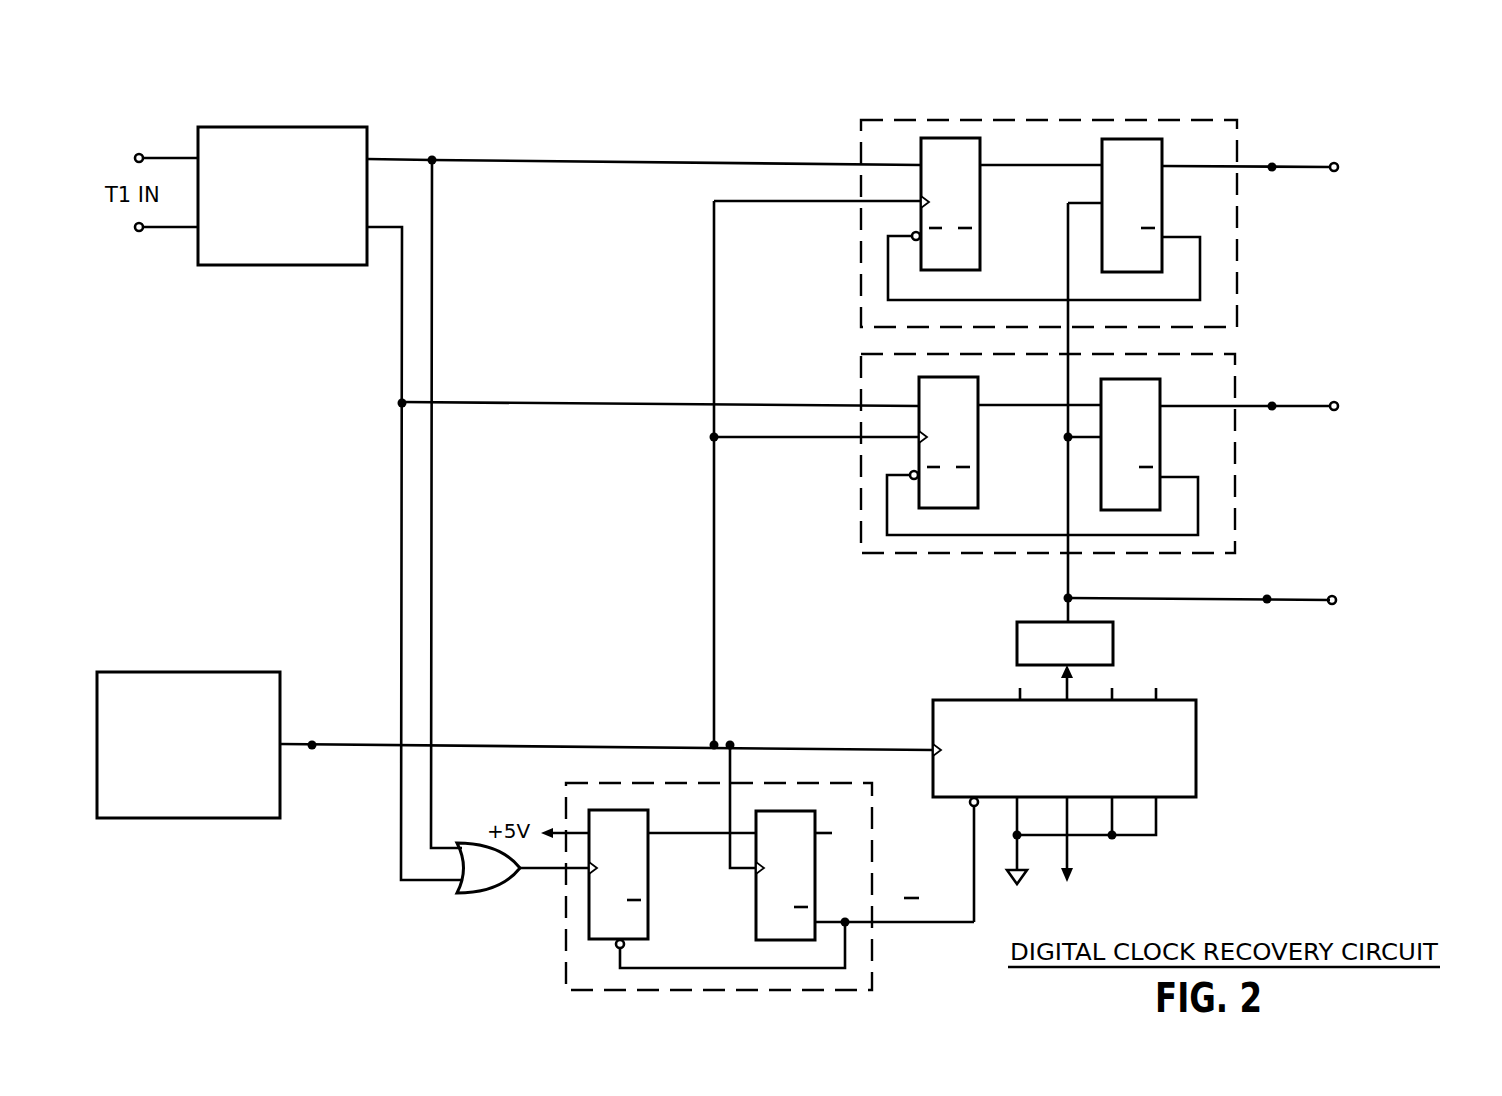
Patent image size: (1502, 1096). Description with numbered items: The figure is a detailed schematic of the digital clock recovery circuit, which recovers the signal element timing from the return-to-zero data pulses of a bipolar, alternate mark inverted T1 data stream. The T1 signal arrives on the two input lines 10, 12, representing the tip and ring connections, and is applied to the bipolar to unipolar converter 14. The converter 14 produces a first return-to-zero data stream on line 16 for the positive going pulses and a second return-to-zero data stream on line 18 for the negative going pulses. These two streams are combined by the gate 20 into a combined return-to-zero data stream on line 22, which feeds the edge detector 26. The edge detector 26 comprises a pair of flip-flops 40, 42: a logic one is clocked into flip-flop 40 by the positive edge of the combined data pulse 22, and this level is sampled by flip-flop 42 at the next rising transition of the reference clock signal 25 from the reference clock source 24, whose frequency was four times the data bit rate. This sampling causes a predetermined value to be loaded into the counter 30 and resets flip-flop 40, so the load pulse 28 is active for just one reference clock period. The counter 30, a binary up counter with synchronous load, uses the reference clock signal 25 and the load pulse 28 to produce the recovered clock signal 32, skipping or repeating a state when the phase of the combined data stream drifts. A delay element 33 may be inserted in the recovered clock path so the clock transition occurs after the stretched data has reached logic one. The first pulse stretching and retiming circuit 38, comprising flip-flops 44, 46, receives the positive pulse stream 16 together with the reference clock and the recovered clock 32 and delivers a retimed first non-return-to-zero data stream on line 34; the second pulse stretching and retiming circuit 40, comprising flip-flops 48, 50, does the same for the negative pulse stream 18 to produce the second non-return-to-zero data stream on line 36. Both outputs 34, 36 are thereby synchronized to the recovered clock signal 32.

The input line 10 is at (172, 153).
The input line 12 is at (172, 230).
The bipolar to unipolar converter 14 is at (290, 127).
The line 16 is at (382, 153).
The line 18 is at (383, 230).
The gate 20 is at (480, 840).
The line 22 is at (542, 872).
The reference clock source 24 is at (223, 668).
The reference clock signal 25 is at (357, 740).
The edge detector 26 is at (695, 884).
The load pulse 28 is at (970, 850).
The counter 30 is at (1196, 752).
The recovered clock signal 32 is at (1063, 590).
The delay element 33 is at (1113, 640).
The line 34 is at (1308, 170).
The line 36 is at (1315, 408).
The first pulse stretching and retiming circuit 38 is at (1091, 209).
The second pulse stretching and retiming circuit 40 is at (953, 631).
The flip-flop 42 is at (756, 913).
The flip-flop 44 is at (980, 210).
The flip-flop 46 is at (1102, 180).
The flip-flop 48 is at (978, 452).
The flip-flop 50 is at (1160, 450).